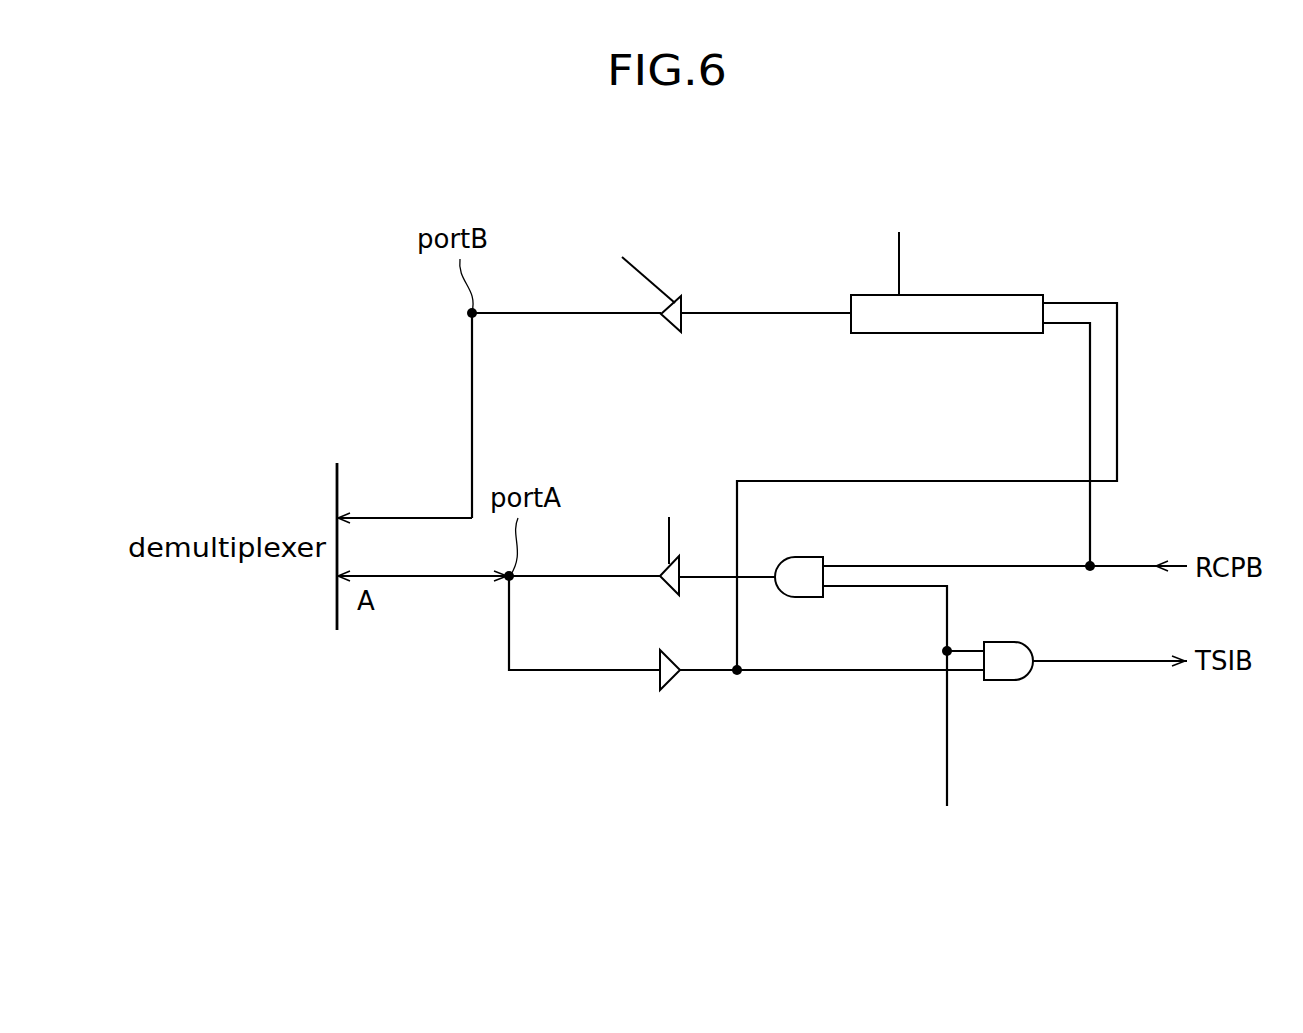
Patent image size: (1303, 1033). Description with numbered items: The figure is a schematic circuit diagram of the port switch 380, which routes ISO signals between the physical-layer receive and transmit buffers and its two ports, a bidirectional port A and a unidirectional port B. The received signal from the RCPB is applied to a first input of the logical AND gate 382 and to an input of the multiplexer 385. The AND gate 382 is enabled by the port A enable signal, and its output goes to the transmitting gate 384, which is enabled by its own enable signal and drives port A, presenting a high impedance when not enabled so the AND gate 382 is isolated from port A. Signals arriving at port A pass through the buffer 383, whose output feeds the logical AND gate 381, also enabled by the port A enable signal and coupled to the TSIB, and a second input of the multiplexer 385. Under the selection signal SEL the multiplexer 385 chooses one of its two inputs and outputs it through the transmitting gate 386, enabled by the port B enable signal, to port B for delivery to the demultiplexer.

The port switch 380 is at (613, 712).
The logical AND gate 381 is at (1003, 680).
The logical AND gate 382 is at (815, 557).
The buffer 383 is at (666, 683).
The transmitting gate 384 is at (662, 584).
The multiplexer 385 is at (1012, 295).
The transmitting gate 386 is at (684, 306).